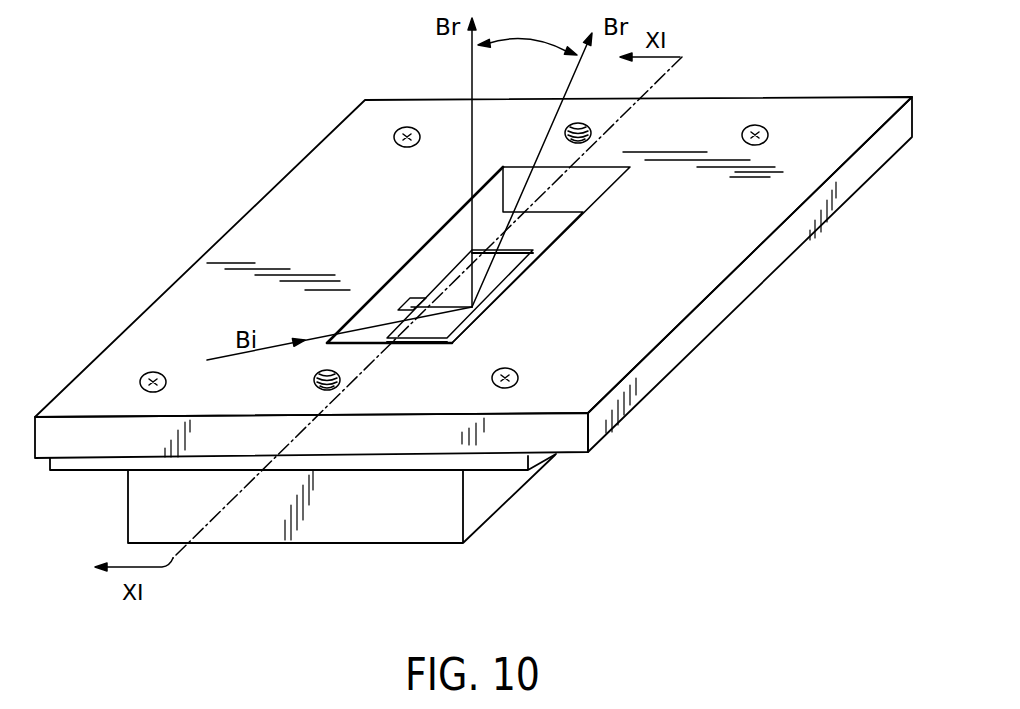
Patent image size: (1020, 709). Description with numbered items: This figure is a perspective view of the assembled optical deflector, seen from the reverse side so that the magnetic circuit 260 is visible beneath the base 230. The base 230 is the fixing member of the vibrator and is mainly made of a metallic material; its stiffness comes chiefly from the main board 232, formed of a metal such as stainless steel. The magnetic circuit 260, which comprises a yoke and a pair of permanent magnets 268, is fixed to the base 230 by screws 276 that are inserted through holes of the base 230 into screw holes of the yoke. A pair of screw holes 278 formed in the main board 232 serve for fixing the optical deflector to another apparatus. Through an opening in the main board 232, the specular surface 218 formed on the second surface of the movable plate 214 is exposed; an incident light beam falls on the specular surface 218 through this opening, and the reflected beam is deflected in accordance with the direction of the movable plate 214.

The movable plate 214 is at (527, 244).
The specular surface 218 is at (452, 300).
The base 230 is at (166, 276).
The main board 232 is at (682, 307).
The magnetic circuit 260 is at (405, 552).
The permanent magnets 268 is at (557, 223).
The screws 276 is at (407, 127).
The screw holes 278 is at (585, 125).